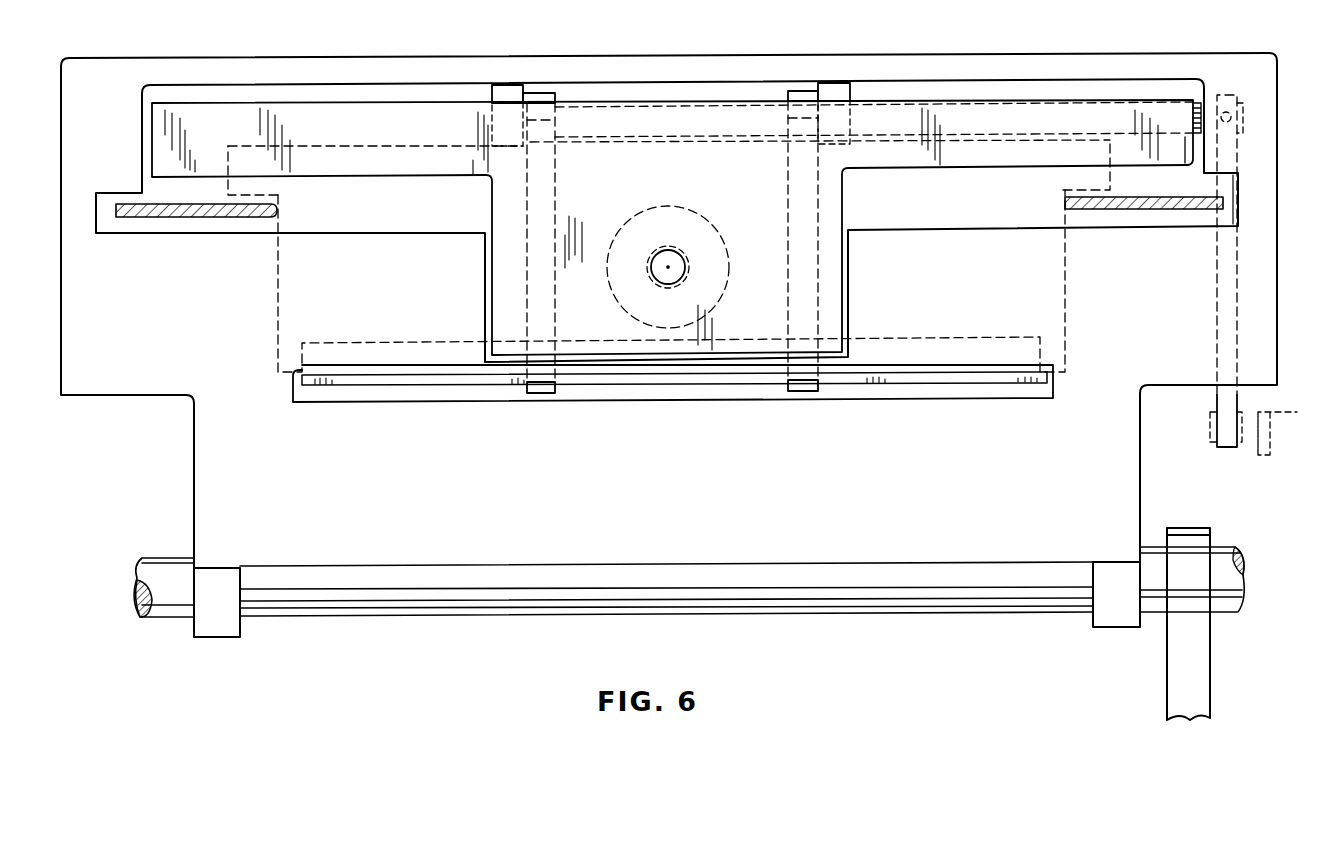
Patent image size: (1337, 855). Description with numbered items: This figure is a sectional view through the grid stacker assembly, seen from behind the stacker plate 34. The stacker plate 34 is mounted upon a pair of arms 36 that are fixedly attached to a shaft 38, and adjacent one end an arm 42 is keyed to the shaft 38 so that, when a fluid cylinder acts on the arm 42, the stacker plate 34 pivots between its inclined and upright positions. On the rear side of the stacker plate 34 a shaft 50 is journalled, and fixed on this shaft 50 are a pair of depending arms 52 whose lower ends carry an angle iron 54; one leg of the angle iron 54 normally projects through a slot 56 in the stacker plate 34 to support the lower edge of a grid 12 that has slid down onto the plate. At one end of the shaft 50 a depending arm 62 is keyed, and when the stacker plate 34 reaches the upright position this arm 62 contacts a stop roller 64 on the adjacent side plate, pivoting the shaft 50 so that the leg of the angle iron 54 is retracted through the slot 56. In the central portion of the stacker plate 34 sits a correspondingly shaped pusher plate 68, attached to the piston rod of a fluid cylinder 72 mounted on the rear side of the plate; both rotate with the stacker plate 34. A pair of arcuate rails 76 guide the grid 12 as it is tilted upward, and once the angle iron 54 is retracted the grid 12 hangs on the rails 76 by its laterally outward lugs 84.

The grid 12 is at (276, 300).
The stacker plate 34 is at (1279, 268).
The arms 36 is at (228, 633).
The shaft 38 is at (768, 605).
The arm 42 is at (1198, 663).
The shaft 50 is at (1195, 115).
The depending arms 52 is at (556, 196).
The angle iron 54 is at (923, 370).
The slot 56 is at (873, 388).
The depending arm 62 is at (1218, 318).
The stop roller 64 is at (1215, 440).
The pusher plate 68 is at (845, 200).
The fluid cylinder 72 is at (725, 237).
The arcuate rails 76 is at (197, 218).
The lugs 84 is at (265, 186).